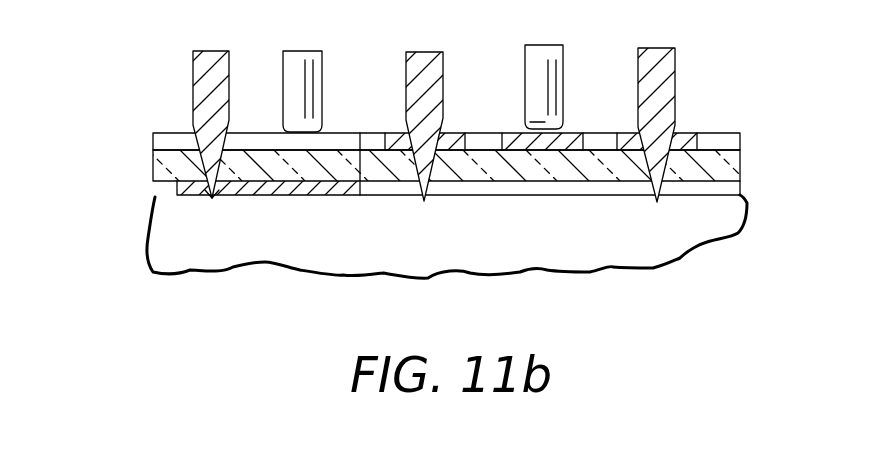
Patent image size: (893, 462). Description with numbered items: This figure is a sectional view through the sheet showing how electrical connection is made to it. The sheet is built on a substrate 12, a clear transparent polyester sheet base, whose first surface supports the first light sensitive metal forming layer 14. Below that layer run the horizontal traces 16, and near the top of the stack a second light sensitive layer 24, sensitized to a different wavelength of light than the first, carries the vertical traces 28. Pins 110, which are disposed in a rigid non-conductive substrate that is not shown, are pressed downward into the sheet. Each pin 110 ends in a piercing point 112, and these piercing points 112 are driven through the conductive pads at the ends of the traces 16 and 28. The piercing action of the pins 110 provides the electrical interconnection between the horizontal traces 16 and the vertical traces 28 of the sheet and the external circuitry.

The substrate 12 is at (665, 218).
The first light sensitive layer 14 is at (742, 185).
The horizontal traces 16 is at (268, 190).
The second light sensitive layer 24 is at (726, 134).
The vertical traces 28 is at (680, 131).
The pins 110 is at (209, 62).
The piercing point 112 is at (212, 200).